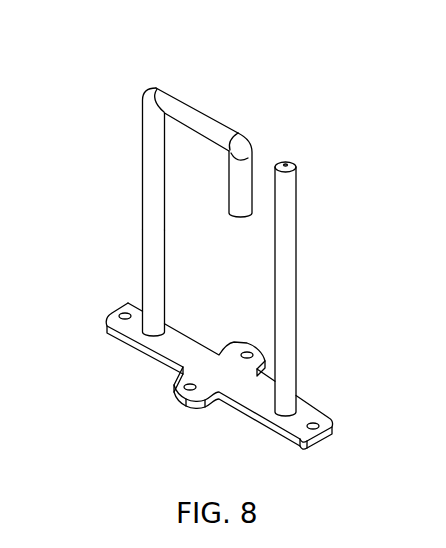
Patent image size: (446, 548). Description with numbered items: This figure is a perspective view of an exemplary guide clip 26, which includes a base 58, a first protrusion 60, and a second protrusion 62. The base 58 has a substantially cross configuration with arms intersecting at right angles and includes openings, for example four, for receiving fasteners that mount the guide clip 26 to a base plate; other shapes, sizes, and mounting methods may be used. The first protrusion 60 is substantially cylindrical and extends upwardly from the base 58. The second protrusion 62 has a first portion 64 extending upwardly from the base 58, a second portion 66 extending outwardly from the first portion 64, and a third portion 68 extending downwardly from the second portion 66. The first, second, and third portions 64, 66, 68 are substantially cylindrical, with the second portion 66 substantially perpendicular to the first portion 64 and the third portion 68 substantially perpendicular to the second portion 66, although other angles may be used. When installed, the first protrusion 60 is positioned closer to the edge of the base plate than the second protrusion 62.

The guide clip 26 is at (79, 110).
The base 58 is at (137, 350).
The first protrusion 60 is at (290, 232).
The second protrusion 62 is at (150, 165).
The first portion 64 is at (143, 288).
The second portion 66 is at (177, 100).
The third portion 68 is at (248, 172).